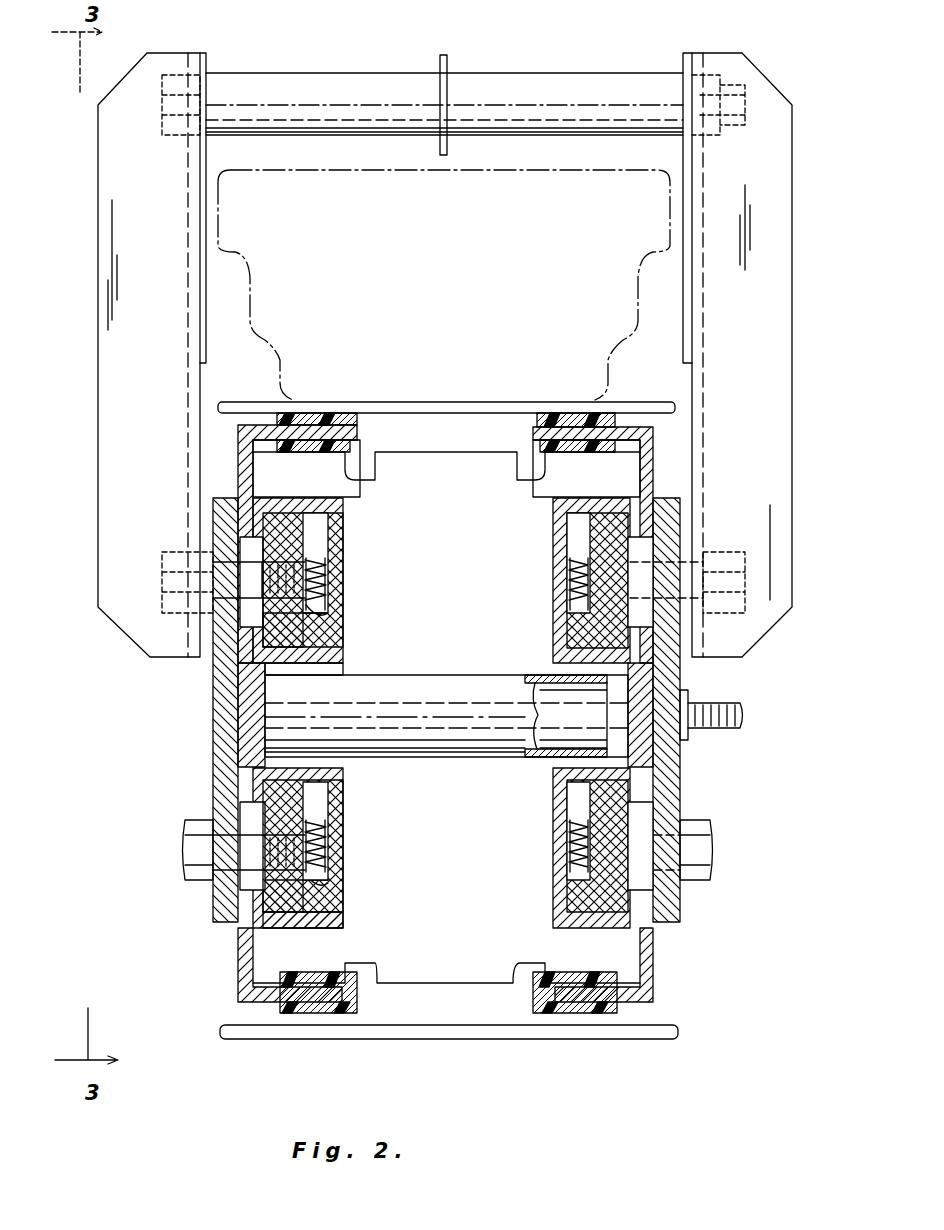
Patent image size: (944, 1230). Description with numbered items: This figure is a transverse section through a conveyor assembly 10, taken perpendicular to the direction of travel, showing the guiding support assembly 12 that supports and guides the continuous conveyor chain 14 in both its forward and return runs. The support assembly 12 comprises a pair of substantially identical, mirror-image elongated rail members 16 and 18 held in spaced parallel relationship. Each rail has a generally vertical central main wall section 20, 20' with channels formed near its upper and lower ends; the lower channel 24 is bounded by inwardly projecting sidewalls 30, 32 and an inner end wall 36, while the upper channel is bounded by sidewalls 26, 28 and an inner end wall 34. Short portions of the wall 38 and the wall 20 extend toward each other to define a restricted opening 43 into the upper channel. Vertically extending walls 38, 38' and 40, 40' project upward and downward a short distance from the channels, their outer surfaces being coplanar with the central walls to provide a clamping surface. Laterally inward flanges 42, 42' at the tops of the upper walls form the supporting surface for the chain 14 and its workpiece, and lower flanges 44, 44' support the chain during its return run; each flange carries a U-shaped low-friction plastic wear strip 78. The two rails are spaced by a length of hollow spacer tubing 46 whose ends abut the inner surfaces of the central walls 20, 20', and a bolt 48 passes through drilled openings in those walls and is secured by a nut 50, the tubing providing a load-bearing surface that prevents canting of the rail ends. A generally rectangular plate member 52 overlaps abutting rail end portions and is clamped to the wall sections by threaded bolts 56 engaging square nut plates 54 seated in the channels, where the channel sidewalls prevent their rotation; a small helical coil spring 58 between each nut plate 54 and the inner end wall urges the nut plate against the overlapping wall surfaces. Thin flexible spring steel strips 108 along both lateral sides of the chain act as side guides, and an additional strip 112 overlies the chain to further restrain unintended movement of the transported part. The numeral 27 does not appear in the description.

The conveyor assembly 10 is at (112, 822).
The guiding support assembly 12 is at (726, 772).
The conveyor chain 14 is at (448, 402).
The rail member 16 is at (352, 829).
The rail member 18 is at (545, 861).
The central main wall section 20 is at (211, 715).
The central main wall section 20' is at (684, 714).
The channel 24 is at (325, 790).
The sidewall 26 is at (283, 517).
The upper carrier block 27 is at (318, 520).
The sidewall 28 is at (318, 662).
The sidewall 30 is at (315, 770).
The sidewall 32 is at (315, 920).
The inner end wall 34 is at (338, 572).
The inner end wall 36 is at (340, 865).
The vertically extending wall 38 is at (248, 544).
The vertically extending wall 38' is at (648, 545).
The vertically extending wall 40 is at (262, 965).
The vertically extending wall 40' is at (655, 965).
The laterally inwardly extending flange 42 is at (307, 404).
The laterally inwardly extending flange 42' is at (602, 404).
The restricted opening 43 is at (245, 610).
The laterally inwardly extending flange 44 is at (267, 996).
The laterally inwardly extending flange 44' is at (601, 1023).
The spacer tubing 46 is at (478, 748).
The bolt 48 is at (540, 715).
The nut 50 is at (675, 700).
The plate member 52 is at (225, 758).
The nut plate 54 is at (300, 640).
The threaded bolt 56 is at (197, 852).
The helical coil spring 58 is at (320, 617).
The wear strip 78 is at (347, 420).
The side guide strip 108 is at (205, 298).
The additional strip 112 is at (447, 55).